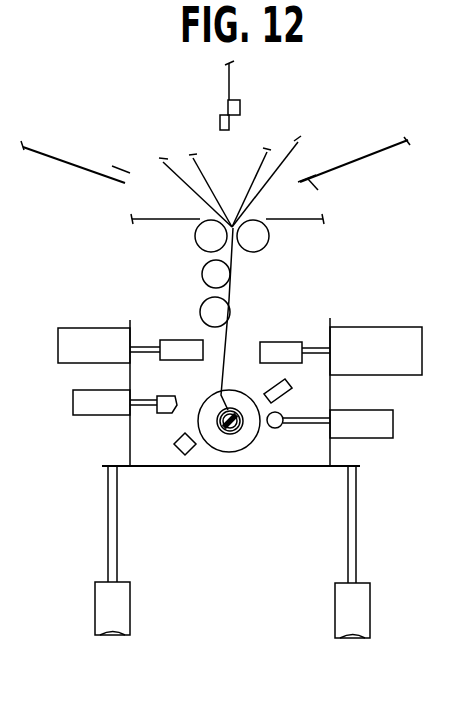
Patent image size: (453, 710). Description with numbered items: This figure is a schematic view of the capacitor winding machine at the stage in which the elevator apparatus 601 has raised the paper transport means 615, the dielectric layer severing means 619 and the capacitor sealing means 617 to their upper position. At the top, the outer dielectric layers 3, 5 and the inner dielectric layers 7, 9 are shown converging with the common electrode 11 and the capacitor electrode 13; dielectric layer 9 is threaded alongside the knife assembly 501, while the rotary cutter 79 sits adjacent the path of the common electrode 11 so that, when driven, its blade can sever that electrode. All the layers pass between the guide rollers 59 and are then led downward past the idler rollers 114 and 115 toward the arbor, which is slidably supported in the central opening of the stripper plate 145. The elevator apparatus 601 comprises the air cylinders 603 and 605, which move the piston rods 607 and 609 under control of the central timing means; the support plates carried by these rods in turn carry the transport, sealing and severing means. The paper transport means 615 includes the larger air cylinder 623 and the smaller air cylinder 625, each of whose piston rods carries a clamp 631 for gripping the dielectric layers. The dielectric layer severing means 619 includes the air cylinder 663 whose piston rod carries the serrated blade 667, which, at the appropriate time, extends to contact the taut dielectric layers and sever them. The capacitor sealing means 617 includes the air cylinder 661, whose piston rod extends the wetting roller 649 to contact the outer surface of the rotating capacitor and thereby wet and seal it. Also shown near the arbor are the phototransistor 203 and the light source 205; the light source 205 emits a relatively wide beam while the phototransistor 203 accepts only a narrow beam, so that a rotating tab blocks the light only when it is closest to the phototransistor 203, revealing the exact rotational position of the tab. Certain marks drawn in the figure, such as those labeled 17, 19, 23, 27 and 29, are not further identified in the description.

The outer dielectric layer 3 is at (141, 216).
The outer dielectric layer 5 is at (283, 208).
The inner dielectric layer 7 is at (197, 164).
The inner dielectric layer 9 is at (265, 154).
The common electrode 11 is at (299, 145).
The capacitor electrode 13 is at (173, 171).
The guide bar 17 is at (81, 172).
The guide bar 19 is at (363, 160).
The guide bar 23 is at (59, 150).
The guide bar 27 is at (384, 154).
The guide post 29 is at (230, 83).
The guide rollers 59 is at (209, 237).
The rotary cutter 79 is at (119, 167).
The idler roller 114 is at (211, 273).
The idler roller 115 is at (212, 310).
The stripper plate 145 is at (231, 452).
The phototransistor 203 is at (286, 384).
The light source 205 is at (183, 437).
The knife assembly 501 is at (212, 107).
The elevator apparatus 601 is at (370, 543).
The air cylinder 603 is at (362, 600).
The air cylinder 605 is at (105, 594).
The piston rod 607 is at (348, 522).
The piston rod 609 is at (117, 527).
The paper transport means 615 is at (366, 314).
The capacitor sealing means 617 is at (404, 427).
The dielectric layer severing means 619 is at (66, 404).
The air cylinder 623 is at (376, 351).
The air cylinder 625 is at (94, 345).
The clamp 631 is at (276, 324).
The wetting roller 649 is at (276, 429).
The air cylinder 661 is at (361, 424).
The air cylinder 663 is at (101, 402).
The serrated blade 667 is at (199, 398).